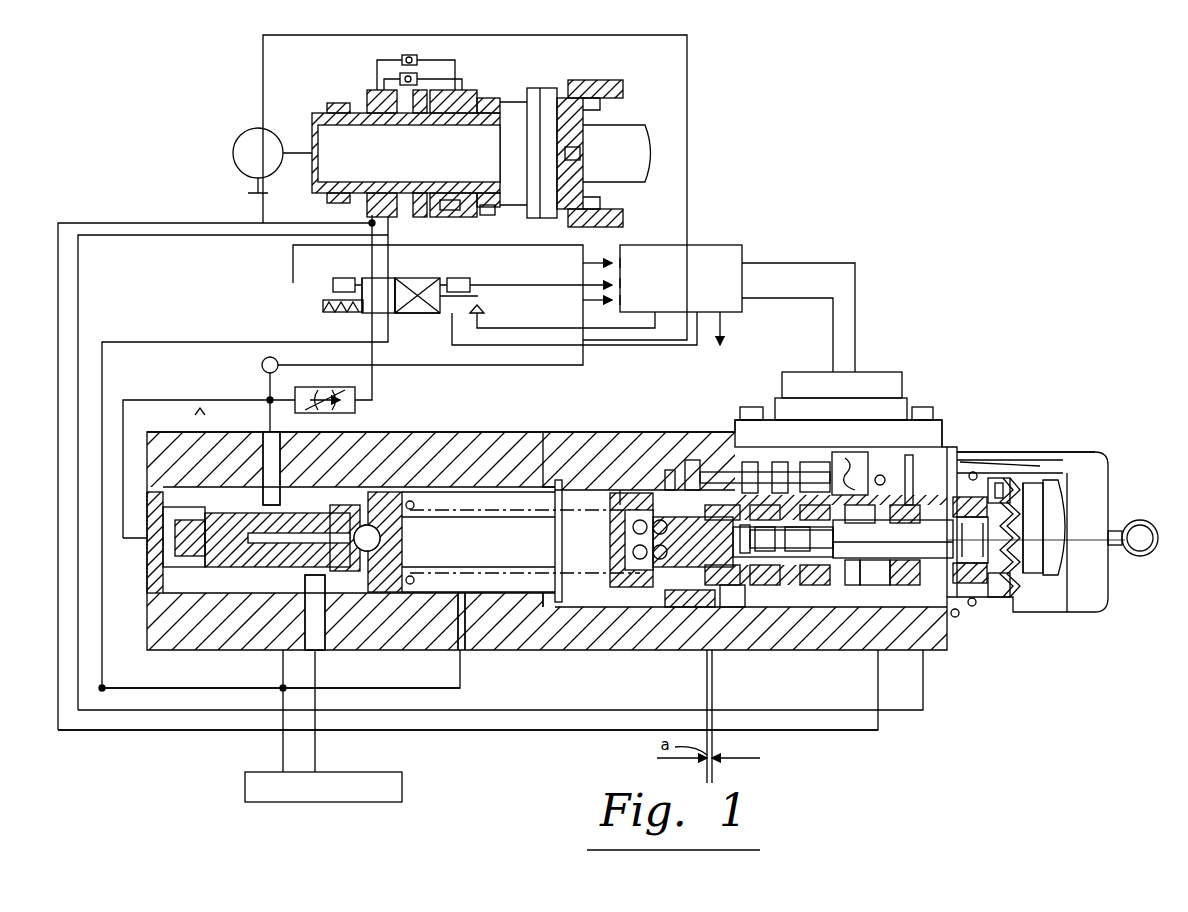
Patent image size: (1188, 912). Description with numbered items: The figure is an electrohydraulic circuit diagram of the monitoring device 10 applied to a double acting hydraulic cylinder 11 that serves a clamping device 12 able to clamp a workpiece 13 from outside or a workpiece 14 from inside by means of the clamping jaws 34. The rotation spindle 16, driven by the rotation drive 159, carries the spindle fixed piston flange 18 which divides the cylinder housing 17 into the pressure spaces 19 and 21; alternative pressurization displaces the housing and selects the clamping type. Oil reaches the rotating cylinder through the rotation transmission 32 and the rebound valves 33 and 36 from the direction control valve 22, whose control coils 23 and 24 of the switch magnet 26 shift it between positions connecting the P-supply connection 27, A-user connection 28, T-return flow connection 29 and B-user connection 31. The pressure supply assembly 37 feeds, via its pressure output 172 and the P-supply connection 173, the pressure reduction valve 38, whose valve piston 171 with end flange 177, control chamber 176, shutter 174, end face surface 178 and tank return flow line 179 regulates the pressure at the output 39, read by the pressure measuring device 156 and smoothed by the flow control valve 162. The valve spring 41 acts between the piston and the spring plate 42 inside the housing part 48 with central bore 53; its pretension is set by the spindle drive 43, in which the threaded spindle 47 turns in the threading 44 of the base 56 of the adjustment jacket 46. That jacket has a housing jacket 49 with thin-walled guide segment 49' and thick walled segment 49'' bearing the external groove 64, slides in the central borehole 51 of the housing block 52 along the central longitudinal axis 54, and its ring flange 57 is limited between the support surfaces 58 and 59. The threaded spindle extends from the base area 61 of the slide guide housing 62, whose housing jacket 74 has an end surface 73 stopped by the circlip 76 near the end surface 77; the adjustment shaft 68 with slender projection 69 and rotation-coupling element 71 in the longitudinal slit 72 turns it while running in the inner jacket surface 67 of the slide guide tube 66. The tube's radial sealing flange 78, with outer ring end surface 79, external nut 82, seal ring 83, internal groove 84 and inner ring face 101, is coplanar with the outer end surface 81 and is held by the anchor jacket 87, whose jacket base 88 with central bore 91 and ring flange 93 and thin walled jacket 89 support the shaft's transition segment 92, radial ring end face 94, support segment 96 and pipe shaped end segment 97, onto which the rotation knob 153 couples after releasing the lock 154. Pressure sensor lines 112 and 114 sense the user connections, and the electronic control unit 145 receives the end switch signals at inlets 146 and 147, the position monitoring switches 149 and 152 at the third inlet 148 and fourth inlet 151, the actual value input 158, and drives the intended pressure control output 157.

The electrohydraulic monitoring device 10 is at (902, 268).
The double acting linear hydraulic cylinder 11 is at (492, 214).
The clamping device 12 is at (552, 86).
The workpiece 13 is at (655, 142).
The workpiece 14 is at (605, 82).
The rotation spindle 16 is at (322, 113).
The cylinder housing 17 is at (448, 205).
The spindle fixed piston flange 18 is at (430, 193).
The pressure space 19 is at (445, 200).
The pressure space 21 is at (462, 200).
The direction control valve 22 is at (323, 297).
The control coil 23 is at (455, 320).
The control coil 24 is at (485, 313).
The switch magnet 26 is at (478, 298).
The P-high pressure supply connection 27 is at (362, 305).
The A-user connection 28 is at (370, 278).
The T-return flow connection 29 is at (395, 313).
The B-user connection 31 is at (397, 283).
The rotation transmission 32 is at (360, 205).
The return valve 33 is at (402, 57).
The clamping jaws 34 is at (582, 150).
The rebound valve 36 is at (418, 78).
The pressure supply assembly 37 is at (402, 795).
The pressure reduction valve 38 is at (285, 570).
The output of the pressure reduction valve 39 is at (268, 404).
The valve spring 41 is at (400, 598).
The spring plate 42 is at (608, 530).
The spindle drive 43 is at (655, 480).
The threading 44 is at (640, 600).
The adjustment jacket 46 is at (670, 610).
The threaded spindle 47 is at (700, 600).
The housing part 48 is at (565, 640).
The housing jacket 49 is at (826, 461).
The thin-walled guide segment 49' is at (763, 438).
The thick walled jacket segment 49'' is at (716, 433).
The central through-going borehole 51 is at (880, 607).
The housing block 52 is at (908, 607).
The central bore 53 is at (555, 435).
The central longitudinal axis 54 is at (455, 540).
The base of the adjusting jacket 56 is at (620, 445).
The ring flange 57 is at (748, 590).
The support surface 58 is at (710, 600).
The support surface 59 is at (755, 590).
The base area 61 is at (745, 607).
The slide guide housing 62 is at (765, 565).
The external groove 64 is at (690, 462).
The slide guide tube 66 is at (925, 610).
The inner jacket surface 67 is at (835, 590).
The adjustment shaft 68 is at (830, 607).
The slender projection 69 is at (808, 607).
The rotation-coupling element 71 is at (805, 590).
The longitudinal slit 72 is at (815, 590).
The free ring shaped end surface 73 is at (790, 420).
The housing jacket 74 is at (770, 450).
The circlip 76 is at (800, 490).
The end surface 77 is at (838, 490).
The radial sealing flange 78 is at (957, 618).
The outer ring end surface 79 is at (925, 440).
The outer end surface 81 is at (935, 452).
The external nut 82 is at (905, 420).
The seal ring 83 is at (908, 420).
The internal groove 84 is at (965, 610).
The anchor jacket 87 is at (990, 590).
The jacket base 88 is at (970, 458).
The thin walled jacket 89 is at (1045, 470).
The central through going bore 91 is at (990, 476).
The transition segment 92 is at (1020, 480).
The ring flange 93 is at (1015, 597).
The radial ring end face 94 is at (1035, 585).
The support segment 96 is at (1062, 560).
The pipe shaped end segment 97 is at (1045, 590).
The inner ring face 101 is at (845, 420).
The pressure sensor line 112 is at (485, 732).
The second pressure sensor line 114 is at (480, 710).
The electronic control unit 145 is at (742, 245).
The inlet 146 is at (745, 298).
The inlet 147 is at (745, 263).
The third inlet 148 is at (622, 263).
The position monitoring switch 149 is at (333, 285).
The fourth inlet 151 is at (622, 283).
The position monitoring switch 152 is at (465, 278).
The rotation knob 153 is at (1075, 455).
The lock 154 is at (1127, 518).
The pressure measuring device 156 is at (262, 366).
The intended pressure control output 157 is at (725, 332).
The actual value input 158 is at (622, 300).
The rotation drive 159 is at (234, 153).
The flow control valve 162 is at (355, 412).
The valve piston 171 is at (350, 572).
The pressure output 172 is at (315, 770).
The P-supply connection 173 is at (310, 655).
The shutter 174 is at (212, 386).
The control chamber 176 is at (175, 570).
The end flange 177 is at (222, 570).
The end face surface 178 is at (372, 552).
The tank return flow line 179 is at (468, 672).